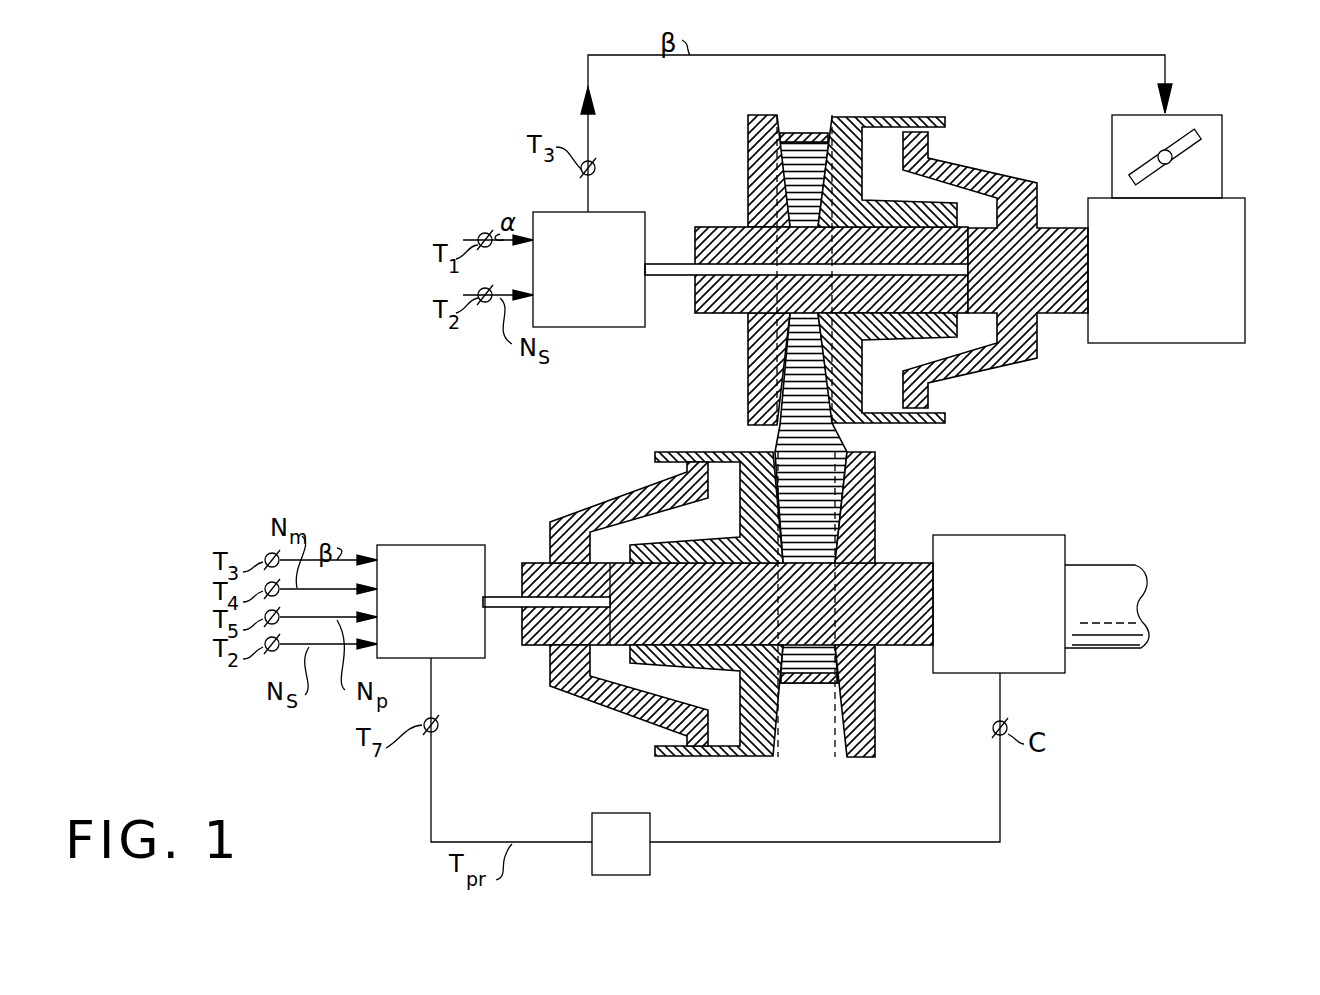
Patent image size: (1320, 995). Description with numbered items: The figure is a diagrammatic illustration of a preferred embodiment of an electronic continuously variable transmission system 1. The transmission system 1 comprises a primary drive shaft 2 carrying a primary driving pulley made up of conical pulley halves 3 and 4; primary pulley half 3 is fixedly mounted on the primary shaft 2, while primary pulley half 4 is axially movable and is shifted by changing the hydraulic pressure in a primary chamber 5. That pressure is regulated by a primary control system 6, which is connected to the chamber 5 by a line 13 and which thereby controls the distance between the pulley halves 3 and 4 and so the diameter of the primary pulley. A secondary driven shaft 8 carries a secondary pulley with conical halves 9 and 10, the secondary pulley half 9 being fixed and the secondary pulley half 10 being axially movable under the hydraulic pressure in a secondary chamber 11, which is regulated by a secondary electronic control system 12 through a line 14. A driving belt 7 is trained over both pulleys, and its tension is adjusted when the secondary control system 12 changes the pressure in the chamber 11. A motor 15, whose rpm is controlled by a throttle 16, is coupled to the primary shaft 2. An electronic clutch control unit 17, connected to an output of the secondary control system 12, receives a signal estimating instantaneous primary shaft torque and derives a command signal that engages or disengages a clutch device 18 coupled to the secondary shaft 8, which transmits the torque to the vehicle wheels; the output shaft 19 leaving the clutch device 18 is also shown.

The transmission system 1 is at (506, 138).
The primary shaft 2 is at (1058, 232).
The primary pulley half 3 is at (760, 122).
The primary pulley half 4 is at (848, 116).
The primary chamber 5 is at (885, 144).
The primary control system 6 is at (610, 212).
The driving belt 7 is at (800, 132).
The secondary shaft 8 is at (887, 563).
The secondary pulley half 9 is at (871, 480).
The secondary pulley half 10 is at (748, 465).
The secondary chamber 11 is at (718, 476).
The secondary electronic control system 12 is at (461, 545).
The line 13 is at (688, 282).
The line 14 is at (503, 610).
The motor 15 is at (1245, 282).
The throttle 16 is at (1222, 175).
The electronic control unit 17 is at (592, 856).
The clutch device 18 is at (1010, 535).
The output drive shaft 19 is at (1098, 585).